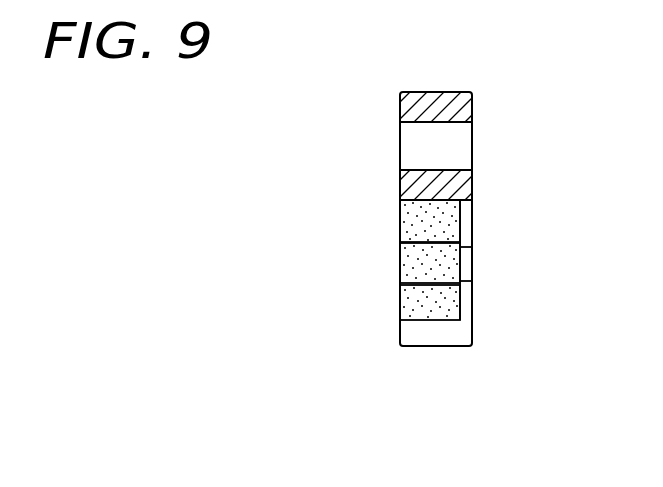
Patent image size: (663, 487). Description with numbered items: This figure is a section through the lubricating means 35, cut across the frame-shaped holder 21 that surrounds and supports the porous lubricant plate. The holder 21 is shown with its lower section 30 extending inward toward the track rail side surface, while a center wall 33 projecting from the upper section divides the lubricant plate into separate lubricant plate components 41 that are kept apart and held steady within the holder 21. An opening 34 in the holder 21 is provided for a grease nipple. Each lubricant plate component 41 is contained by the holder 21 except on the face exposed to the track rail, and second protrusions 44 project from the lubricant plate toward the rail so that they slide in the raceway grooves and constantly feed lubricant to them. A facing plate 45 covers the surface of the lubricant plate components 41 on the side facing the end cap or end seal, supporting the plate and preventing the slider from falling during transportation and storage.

The holder 21 is at (418, 92).
The lower section 30 is at (435, 338).
The center wall 33 is at (415, 100).
The opening 34 is at (420, 152).
The lubricating means 35 is at (473, 110).
The lubricant plate component 41 is at (416, 222).
The second protrusion 44 is at (418, 270).
The facing plate 45 is at (473, 252).